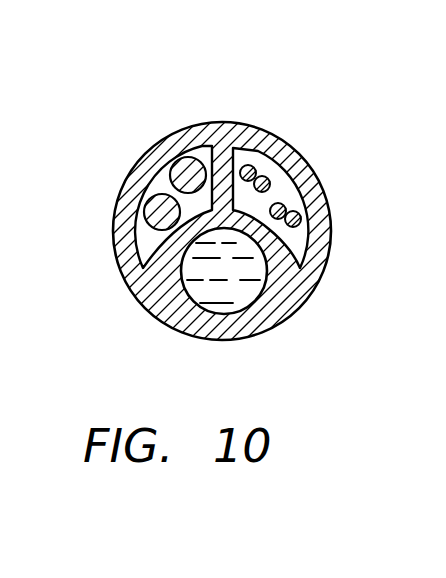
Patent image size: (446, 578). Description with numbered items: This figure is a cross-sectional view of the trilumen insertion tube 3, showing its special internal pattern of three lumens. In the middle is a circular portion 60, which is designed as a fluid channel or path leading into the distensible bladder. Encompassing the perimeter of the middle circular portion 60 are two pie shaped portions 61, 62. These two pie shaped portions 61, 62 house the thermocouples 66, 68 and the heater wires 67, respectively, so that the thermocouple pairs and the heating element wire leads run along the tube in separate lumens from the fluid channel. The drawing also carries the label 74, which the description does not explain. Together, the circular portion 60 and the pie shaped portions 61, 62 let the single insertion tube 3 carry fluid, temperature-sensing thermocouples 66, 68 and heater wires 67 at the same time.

The trilumen insertion tube 3 is at (333, 242).
The circular portion 60 is at (267, 300).
The pie shaped portion 61 is at (325, 188).
The pie shaped portion 62 is at (152, 206).
The thermocouple 66 is at (303, 222).
The heater wires 67 is at (190, 168).
The thermocouple 68 is at (266, 178).
The lumen 74 is at (436, 204).